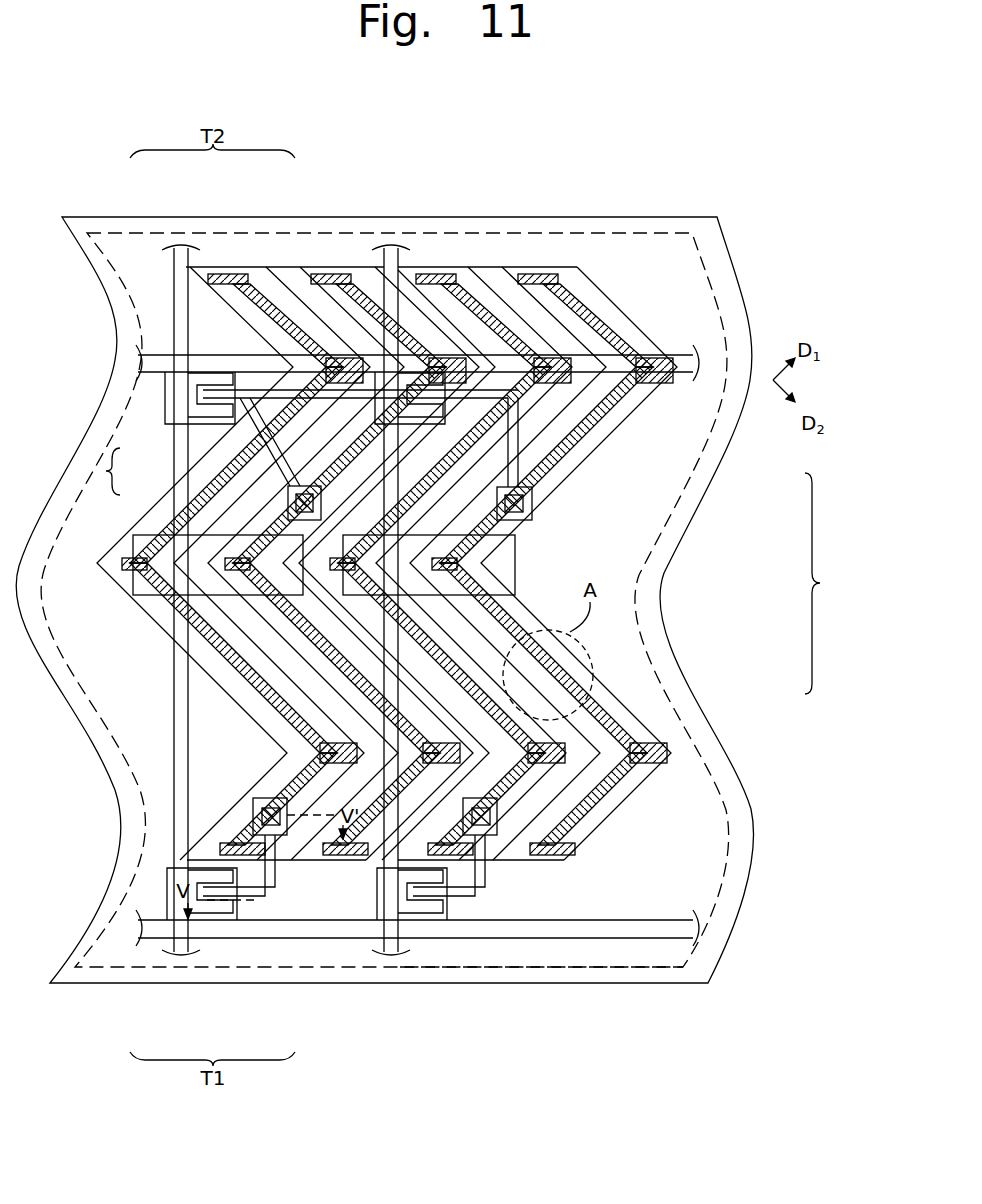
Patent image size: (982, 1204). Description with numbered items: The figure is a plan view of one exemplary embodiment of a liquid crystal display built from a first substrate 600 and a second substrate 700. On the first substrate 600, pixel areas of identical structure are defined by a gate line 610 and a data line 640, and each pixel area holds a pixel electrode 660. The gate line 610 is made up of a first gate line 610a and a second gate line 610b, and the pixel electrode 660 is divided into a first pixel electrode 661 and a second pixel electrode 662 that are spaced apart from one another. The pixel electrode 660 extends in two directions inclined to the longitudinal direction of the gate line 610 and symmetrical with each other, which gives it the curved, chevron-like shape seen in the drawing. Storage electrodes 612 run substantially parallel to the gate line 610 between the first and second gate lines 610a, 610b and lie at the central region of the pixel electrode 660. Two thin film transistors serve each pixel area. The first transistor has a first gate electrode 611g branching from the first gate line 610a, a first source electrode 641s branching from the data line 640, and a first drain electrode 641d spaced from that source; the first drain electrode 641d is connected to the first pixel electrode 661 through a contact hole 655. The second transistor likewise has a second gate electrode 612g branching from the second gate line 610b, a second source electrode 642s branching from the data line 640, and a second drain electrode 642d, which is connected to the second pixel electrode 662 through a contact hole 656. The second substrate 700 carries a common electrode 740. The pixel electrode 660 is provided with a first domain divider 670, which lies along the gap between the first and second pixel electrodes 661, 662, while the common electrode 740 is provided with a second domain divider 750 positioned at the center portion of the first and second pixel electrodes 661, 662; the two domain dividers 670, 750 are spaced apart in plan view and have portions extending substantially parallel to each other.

The second substrate 700 is at (634, 983).
The common electrode 740 is at (572, 975).
The first substrate 600 is at (512, 968).
The data line 640 is at (180, 953).
The gate line 610 is at (833, 583).
The first gate line 610a is at (640, 922).
The second gate line 610b is at (692, 372).
The storage electrode 612 is at (133, 560).
The first domain divider 670 is at (341, 405).
The second domain divider 750 is at (378, 350).
The pixel electrode 660 is at (295, 563).
The first pixel electrode 661 is at (217, 447).
The second pixel electrode 662 is at (288, 492).
The contact hole 656 is at (290, 500).
The contact hole 655 is at (262, 800).
The second gate electrode 612g is at (218, 371).
The second source electrode 642s is at (207, 373).
The second drain electrode 642d is at (255, 389).
The first gate electrode 611g is at (235, 920).
The first source electrode 641s is at (208, 915).
The first drain electrode 641d is at (265, 900).